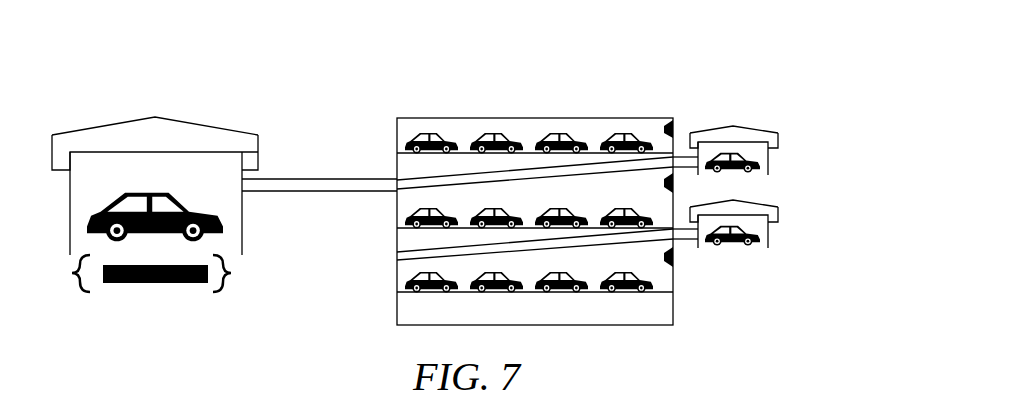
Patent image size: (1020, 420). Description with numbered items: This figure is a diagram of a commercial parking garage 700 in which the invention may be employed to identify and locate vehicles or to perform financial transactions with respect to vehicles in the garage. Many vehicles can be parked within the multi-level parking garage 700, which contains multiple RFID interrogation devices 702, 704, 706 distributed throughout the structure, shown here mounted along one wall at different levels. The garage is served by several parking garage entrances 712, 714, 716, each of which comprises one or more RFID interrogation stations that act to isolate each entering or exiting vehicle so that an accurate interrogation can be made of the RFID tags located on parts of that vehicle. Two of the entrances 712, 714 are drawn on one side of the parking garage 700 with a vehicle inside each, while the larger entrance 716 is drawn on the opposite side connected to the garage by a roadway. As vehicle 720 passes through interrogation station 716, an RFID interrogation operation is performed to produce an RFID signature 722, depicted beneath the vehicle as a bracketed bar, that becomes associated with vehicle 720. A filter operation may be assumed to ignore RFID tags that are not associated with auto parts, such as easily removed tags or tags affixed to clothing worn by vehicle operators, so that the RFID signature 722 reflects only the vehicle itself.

The parking garage 700 is at (395, 273).
The RFID interrogation device 702 is at (675, 122).
The RFID interrogation device 704 is at (675, 186).
The RFID interrogation device 706 is at (675, 260).
The parking garage entrance 712 is at (778, 147).
The parking garage entrance 714 is at (778, 222).
The parking garage entrance 716 is at (258, 152).
The vehicle 720 is at (223, 218).
The RFID signature 722 is at (227, 285).